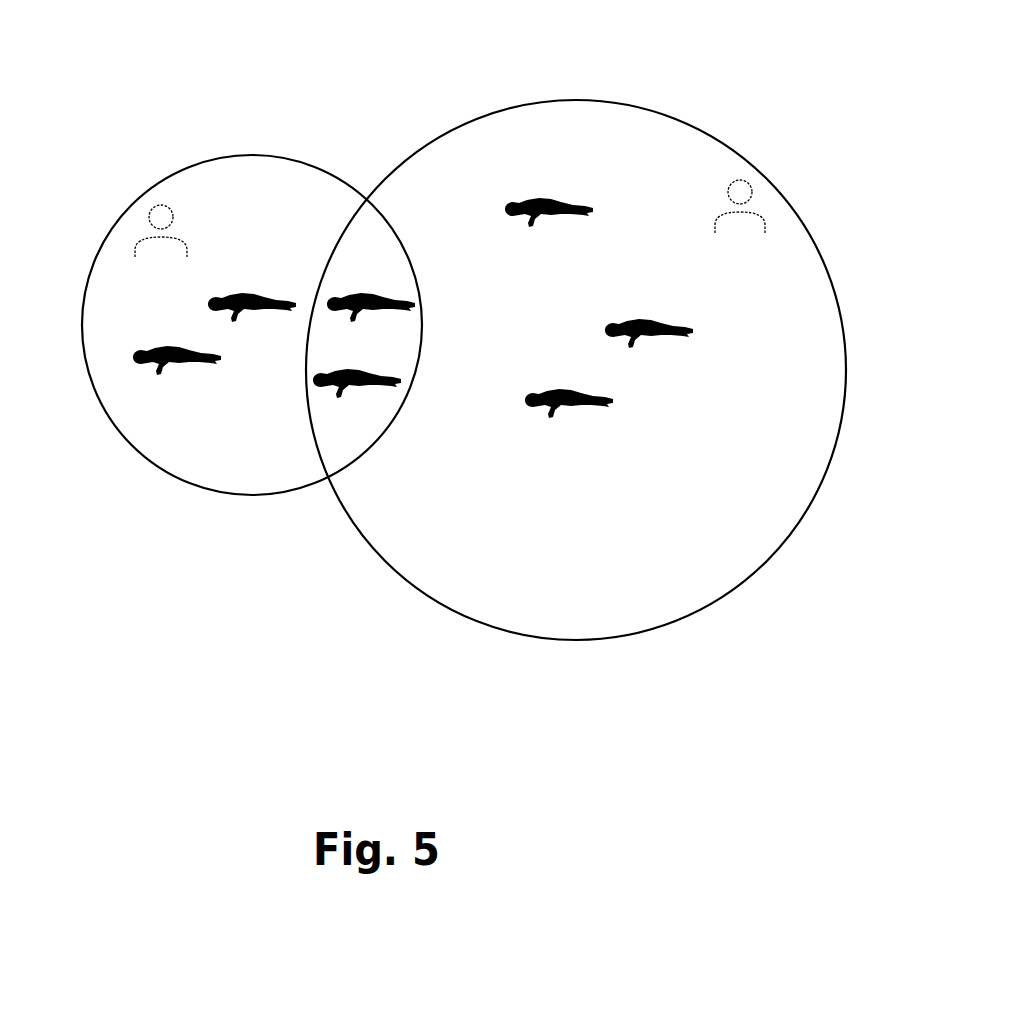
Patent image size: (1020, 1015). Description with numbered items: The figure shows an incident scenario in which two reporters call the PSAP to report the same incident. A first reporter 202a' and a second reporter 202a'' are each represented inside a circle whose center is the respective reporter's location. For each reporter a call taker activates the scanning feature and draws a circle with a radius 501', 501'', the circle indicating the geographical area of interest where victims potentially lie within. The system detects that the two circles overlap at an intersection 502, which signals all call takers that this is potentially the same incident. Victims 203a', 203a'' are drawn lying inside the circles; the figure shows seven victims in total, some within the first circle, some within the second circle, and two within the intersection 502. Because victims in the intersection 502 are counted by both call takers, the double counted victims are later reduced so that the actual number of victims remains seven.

The radius 501' is at (252, 305).
The radius 501'' is at (576, 350).
The first reporter 202a' is at (122, 243).
The second reporter 202a'' is at (791, 213).
The victims 203a' is at (265, 439).
The victims 203a'' is at (576, 453).
The intersection 502 is at (376, 126).